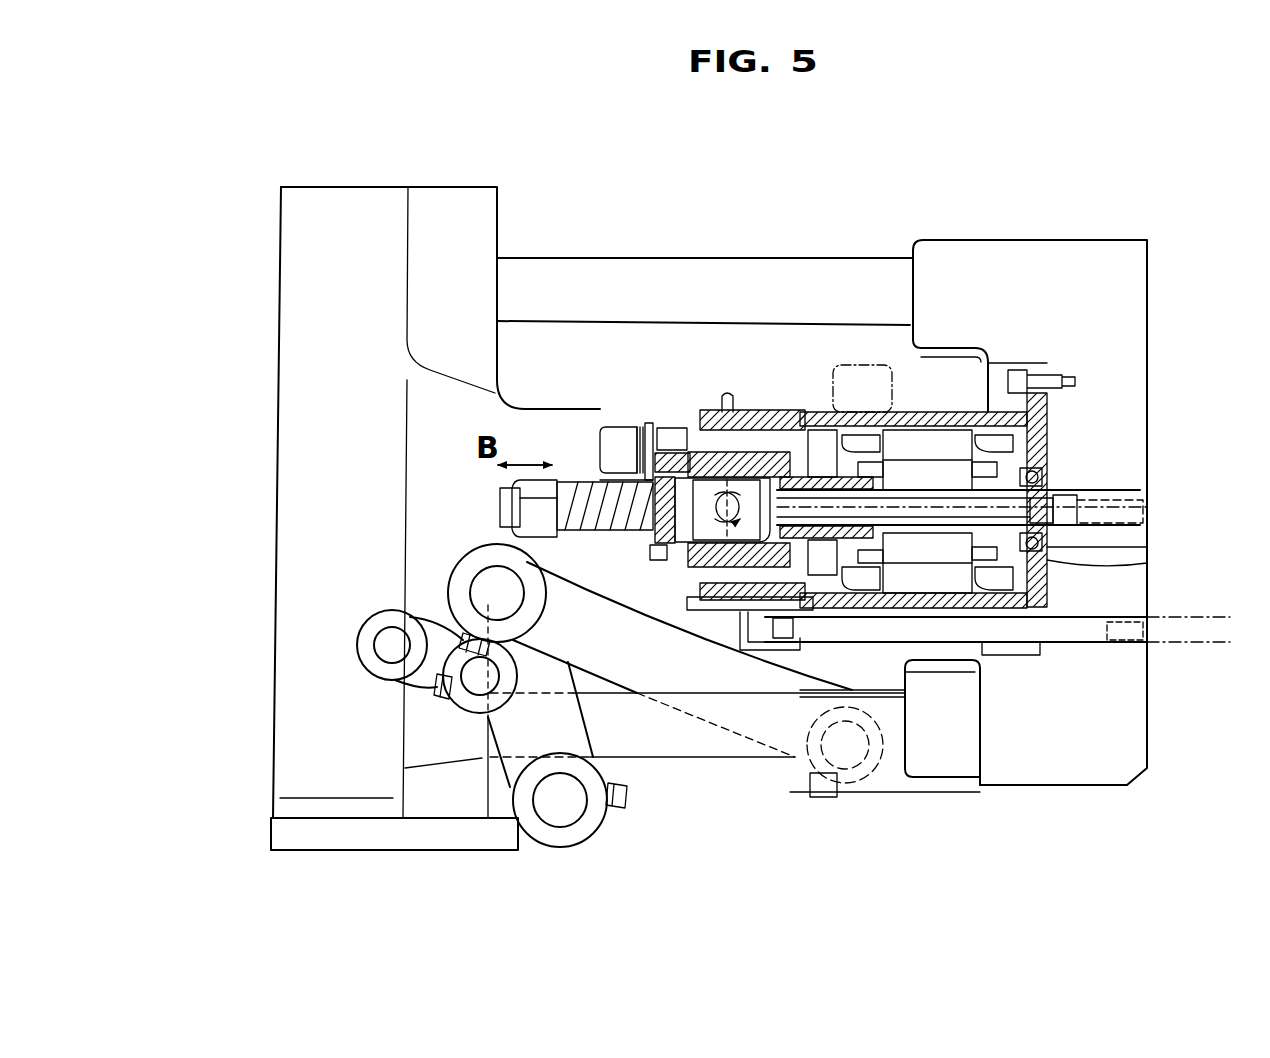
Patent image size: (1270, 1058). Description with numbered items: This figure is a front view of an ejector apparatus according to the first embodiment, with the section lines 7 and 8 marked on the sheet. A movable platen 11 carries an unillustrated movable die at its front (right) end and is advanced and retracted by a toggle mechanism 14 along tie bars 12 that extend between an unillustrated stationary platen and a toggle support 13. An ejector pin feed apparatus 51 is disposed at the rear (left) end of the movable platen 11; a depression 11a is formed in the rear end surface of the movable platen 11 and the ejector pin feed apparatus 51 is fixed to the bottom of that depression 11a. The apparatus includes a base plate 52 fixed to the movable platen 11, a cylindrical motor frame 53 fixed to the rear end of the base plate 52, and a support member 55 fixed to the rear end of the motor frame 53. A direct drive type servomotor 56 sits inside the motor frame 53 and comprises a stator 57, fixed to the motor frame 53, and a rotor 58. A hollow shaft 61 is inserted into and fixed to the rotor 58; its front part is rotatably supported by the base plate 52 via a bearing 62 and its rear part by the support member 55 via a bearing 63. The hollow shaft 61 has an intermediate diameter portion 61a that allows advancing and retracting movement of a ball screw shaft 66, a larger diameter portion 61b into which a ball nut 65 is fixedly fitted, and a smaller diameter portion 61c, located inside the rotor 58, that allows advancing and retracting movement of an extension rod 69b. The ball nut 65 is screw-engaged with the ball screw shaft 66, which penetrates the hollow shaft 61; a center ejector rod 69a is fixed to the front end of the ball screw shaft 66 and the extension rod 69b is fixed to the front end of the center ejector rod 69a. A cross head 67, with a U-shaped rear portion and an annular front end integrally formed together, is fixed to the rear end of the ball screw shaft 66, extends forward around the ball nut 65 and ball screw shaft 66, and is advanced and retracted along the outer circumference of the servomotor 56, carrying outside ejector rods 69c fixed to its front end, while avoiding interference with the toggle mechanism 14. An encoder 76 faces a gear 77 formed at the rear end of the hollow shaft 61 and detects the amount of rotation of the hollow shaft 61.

The section line 7- 7 is at (426, 170).
The section line 8- 8 is at (978, 185).
The movable platen 11 is at (1158, 322).
The depression 11a is at (955, 652).
The tie bars 12 is at (523, 258).
The toggle support 13 is at (297, 327).
The toggle mechanism 14 is at (436, 575).
The ejector pin feed apparatus 51 is at (854, 348).
The base plate 52 is at (1047, 421).
The motor frame 53 is at (965, 408).
The support member 55 is at (708, 545).
The servomotor 56 is at (833, 453).
The stator 57 is at (935, 440).
The rotor 58 is at (905, 468).
The hollow shaft 61 is at (826, 556).
The intermediate diameter portion 61a is at (835, 540).
The larger diameter portion 61b is at (695, 545).
The smaller diameter portion 61c is at (990, 535).
The bearing 62 is at (1047, 455).
The bearing 63 is at (768, 410).
The ball nut 65 is at (668, 545).
The ball screw shaft 66 is at (610, 535).
The cross head 67 is at (568, 480).
The center ejector rod 69a is at (1080, 512).
The extension rod 69b is at (1017, 512).
The outside ejector rods 69c is at (1067, 643).
The encoder 76 is at (625, 427).
The gear 77 is at (670, 425).